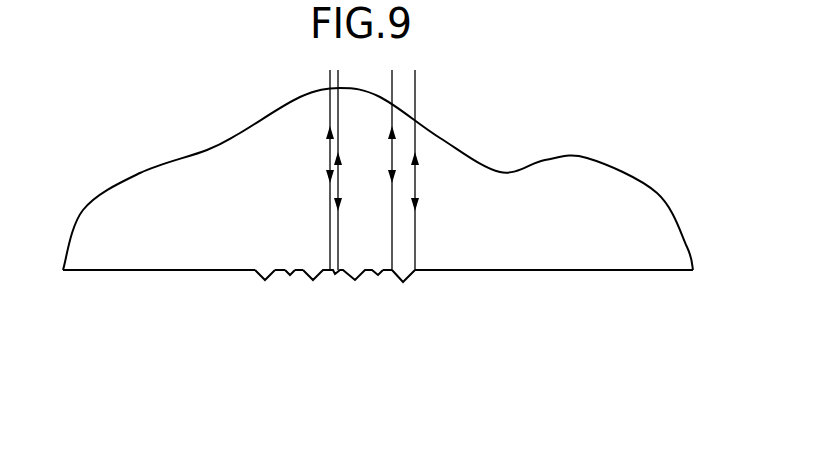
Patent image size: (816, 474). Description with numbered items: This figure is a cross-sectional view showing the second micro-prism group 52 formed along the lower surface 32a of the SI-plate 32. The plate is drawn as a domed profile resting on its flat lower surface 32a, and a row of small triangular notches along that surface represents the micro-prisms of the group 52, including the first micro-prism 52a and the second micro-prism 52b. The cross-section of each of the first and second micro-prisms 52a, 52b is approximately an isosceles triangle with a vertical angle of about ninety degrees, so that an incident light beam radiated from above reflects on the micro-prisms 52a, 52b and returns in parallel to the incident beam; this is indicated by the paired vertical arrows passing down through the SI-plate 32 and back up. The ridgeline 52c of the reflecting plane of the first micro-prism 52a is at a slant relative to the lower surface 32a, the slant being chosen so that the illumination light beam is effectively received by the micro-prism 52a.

The SI-plate 32 is at (601, 155).
The lower surface of the SI-plate 32a is at (585, 271).
The second micro-prism group 52 is at (300, 347).
The first micro-prism 52a is at (260, 277).
The second micro-prism 52b is at (287, 272).
The ridgeline of the reflecting plane of the first micro-prism 52c is at (403, 272).